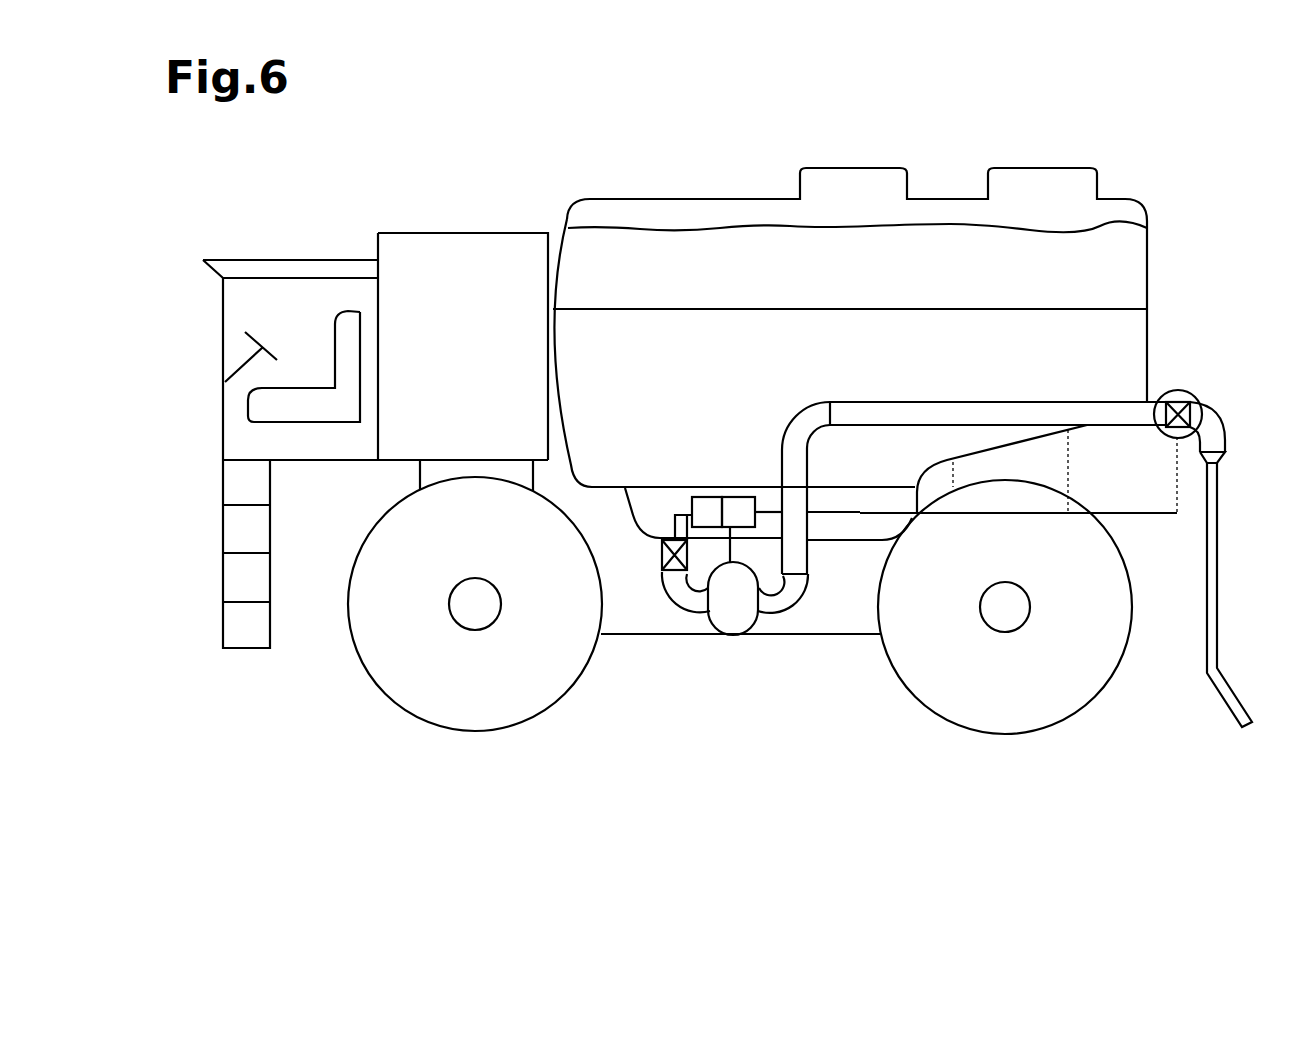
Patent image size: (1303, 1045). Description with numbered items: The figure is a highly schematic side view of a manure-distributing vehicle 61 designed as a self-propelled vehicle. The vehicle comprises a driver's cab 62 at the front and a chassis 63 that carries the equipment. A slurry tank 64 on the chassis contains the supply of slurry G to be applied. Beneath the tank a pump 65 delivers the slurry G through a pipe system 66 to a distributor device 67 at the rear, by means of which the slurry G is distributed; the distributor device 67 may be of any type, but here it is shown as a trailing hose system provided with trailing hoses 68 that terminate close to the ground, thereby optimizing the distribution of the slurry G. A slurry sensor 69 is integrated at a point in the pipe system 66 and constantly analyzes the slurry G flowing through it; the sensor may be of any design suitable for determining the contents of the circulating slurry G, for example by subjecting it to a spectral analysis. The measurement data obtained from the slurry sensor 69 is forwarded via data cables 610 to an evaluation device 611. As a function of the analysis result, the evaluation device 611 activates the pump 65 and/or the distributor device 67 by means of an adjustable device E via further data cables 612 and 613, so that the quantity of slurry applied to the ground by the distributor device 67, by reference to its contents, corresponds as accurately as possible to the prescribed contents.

The manure-distributing vehicle 61 is at (470, 216).
The driver's cab 62 is at (308, 443).
The chassis 63 is at (855, 623).
The slurry tank 64 is at (632, 199).
The slurry G is at (740, 234).
The pump 65 is at (733, 617).
The pipe system 66 is at (900, 408).
The distributor device 67 is at (1180, 392).
The trailing hoses 68 is at (1203, 648).
The slurry sensor 69 is at (650, 567).
The data cables 610 is at (675, 515).
The evaluation device 611 is at (707, 505).
The data cable 612 is at (760, 575).
The data cable 613 is at (828, 545).
The adjustable device E is at (737, 505).